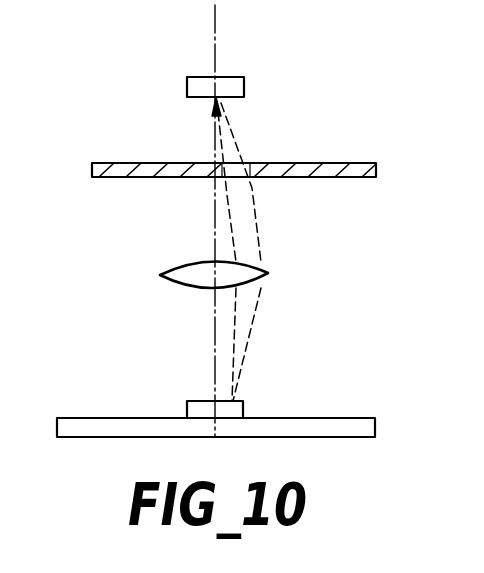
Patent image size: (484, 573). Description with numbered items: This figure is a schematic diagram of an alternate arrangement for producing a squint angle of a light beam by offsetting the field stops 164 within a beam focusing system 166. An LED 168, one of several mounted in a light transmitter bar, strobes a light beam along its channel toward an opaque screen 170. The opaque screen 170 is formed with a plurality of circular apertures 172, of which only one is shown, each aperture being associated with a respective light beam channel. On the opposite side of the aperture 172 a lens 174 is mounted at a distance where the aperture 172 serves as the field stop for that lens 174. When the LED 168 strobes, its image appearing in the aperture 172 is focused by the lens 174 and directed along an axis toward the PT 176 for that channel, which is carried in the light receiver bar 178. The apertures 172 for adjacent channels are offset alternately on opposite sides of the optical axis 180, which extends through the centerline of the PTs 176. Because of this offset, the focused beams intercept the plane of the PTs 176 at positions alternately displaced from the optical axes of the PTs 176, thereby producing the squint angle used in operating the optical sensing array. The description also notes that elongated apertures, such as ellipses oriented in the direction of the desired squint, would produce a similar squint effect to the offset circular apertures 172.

The field stop 164 is at (298, 163).
The beam focusing system 166 is at (127, 240).
The LED 168 is at (242, 77).
The opaque screen 170 is at (142, 162).
The aperture 172 is at (237, 168).
The lens 174 is at (270, 274).
The PT 176 is at (245, 407).
The light receiver bar 178 is at (128, 418).
The optical axis 180 is at (210, 23).